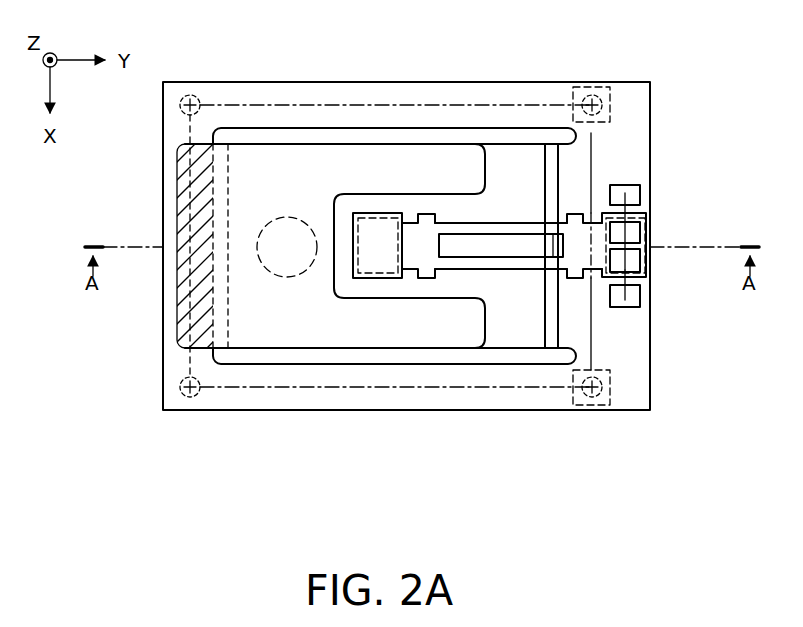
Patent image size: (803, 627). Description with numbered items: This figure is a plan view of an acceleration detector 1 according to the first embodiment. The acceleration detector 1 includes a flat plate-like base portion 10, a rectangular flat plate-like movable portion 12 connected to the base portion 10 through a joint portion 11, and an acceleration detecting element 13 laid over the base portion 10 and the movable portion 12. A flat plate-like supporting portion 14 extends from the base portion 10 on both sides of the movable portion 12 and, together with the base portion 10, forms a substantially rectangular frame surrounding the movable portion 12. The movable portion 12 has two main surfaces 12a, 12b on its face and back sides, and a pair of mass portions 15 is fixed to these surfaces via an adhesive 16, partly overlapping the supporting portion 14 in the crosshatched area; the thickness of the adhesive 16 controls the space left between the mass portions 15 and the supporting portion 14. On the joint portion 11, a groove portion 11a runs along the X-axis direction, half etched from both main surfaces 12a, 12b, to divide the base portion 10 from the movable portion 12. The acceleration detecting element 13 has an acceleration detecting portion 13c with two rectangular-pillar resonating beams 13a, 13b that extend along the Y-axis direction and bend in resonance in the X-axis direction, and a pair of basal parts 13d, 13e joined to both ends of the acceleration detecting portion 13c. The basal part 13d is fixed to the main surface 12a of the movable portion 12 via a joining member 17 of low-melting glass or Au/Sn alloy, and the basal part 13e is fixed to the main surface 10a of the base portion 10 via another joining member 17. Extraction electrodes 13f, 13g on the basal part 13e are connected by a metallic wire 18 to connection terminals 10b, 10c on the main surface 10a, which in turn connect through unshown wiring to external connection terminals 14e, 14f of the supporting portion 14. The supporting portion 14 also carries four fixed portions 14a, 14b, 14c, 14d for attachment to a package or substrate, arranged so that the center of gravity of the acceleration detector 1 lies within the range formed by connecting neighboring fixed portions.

The acceleration detector 1 is at (662, 66).
The base portion 10 is at (626, 314).
The main surface of base portion 10a is at (640, 153).
The connection terminal 10b is at (626, 194).
The connection terminal 10c is at (641, 304).
The joint portion 11 is at (552, 322).
The groove portion 11a is at (557, 338).
The movable portion 12 is at (500, 338).
The main surface of movable portion 12a is at (390, 293).
The main surface of movable portion 12b is at (440, 299).
The acceleration detecting element 13 is at (582, 207).
The resonating beam 13a is at (522, 222).
The resonating beam 13b is at (520, 270).
The acceleration detecting portion 13c is at (458, 218).
The basal part 13d is at (392, 212).
The basal part 13e is at (641, 207).
The extraction electrode 13f is at (626, 232).
The extraction electrode 13g is at (626, 262).
The supporting portion 14 is at (164, 183).
The fixed portion 14a is at (190, 94).
The fixed portion 14b is at (596, 94).
The fixed portion 14c is at (592, 406).
The fixed portion 14d is at (189, 398).
The external connection terminal 14e is at (619, 86).
The external connection terminal 14f is at (613, 396).
The mass portion 15 is at (177, 222).
The adhesive 16 is at (292, 217).
The joining member 17 is at (375, 216).
The metallic wire 18 is at (627, 296).